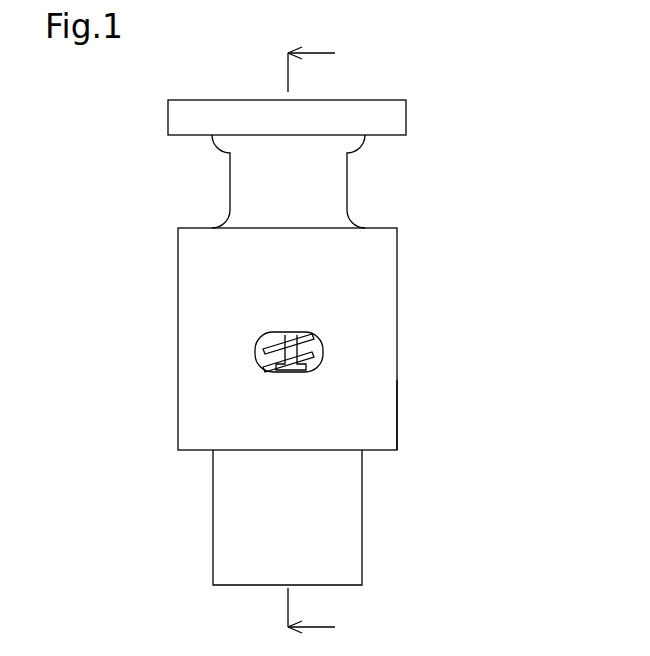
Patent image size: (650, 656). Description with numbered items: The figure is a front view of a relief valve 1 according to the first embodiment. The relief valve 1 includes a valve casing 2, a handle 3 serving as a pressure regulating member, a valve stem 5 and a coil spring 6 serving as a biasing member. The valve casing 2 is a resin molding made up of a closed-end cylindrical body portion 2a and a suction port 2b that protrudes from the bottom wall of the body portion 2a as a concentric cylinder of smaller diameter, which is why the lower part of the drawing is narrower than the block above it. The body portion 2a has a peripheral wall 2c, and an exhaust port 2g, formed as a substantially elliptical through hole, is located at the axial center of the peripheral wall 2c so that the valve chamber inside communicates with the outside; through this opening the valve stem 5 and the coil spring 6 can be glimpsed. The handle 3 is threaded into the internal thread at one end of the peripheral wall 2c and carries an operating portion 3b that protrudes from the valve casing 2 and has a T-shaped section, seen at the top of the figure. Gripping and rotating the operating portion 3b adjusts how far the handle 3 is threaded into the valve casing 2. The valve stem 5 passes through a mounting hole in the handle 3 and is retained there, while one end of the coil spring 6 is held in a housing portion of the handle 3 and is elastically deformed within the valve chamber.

The relief valve 1 is at (455, 110).
The valve casing 2 is at (397, 280).
The body portion 2a is at (287, 339).
The suction port 2b is at (362, 518).
The peripheral wall 2c is at (397, 413).
The exhaust port 2g is at (263, 358).
The handle 3 is at (363, 100).
The operating portion 3b is at (168, 117).
The valve stem 5 is at (297, 342).
The coil spring 6 is at (267, 337).